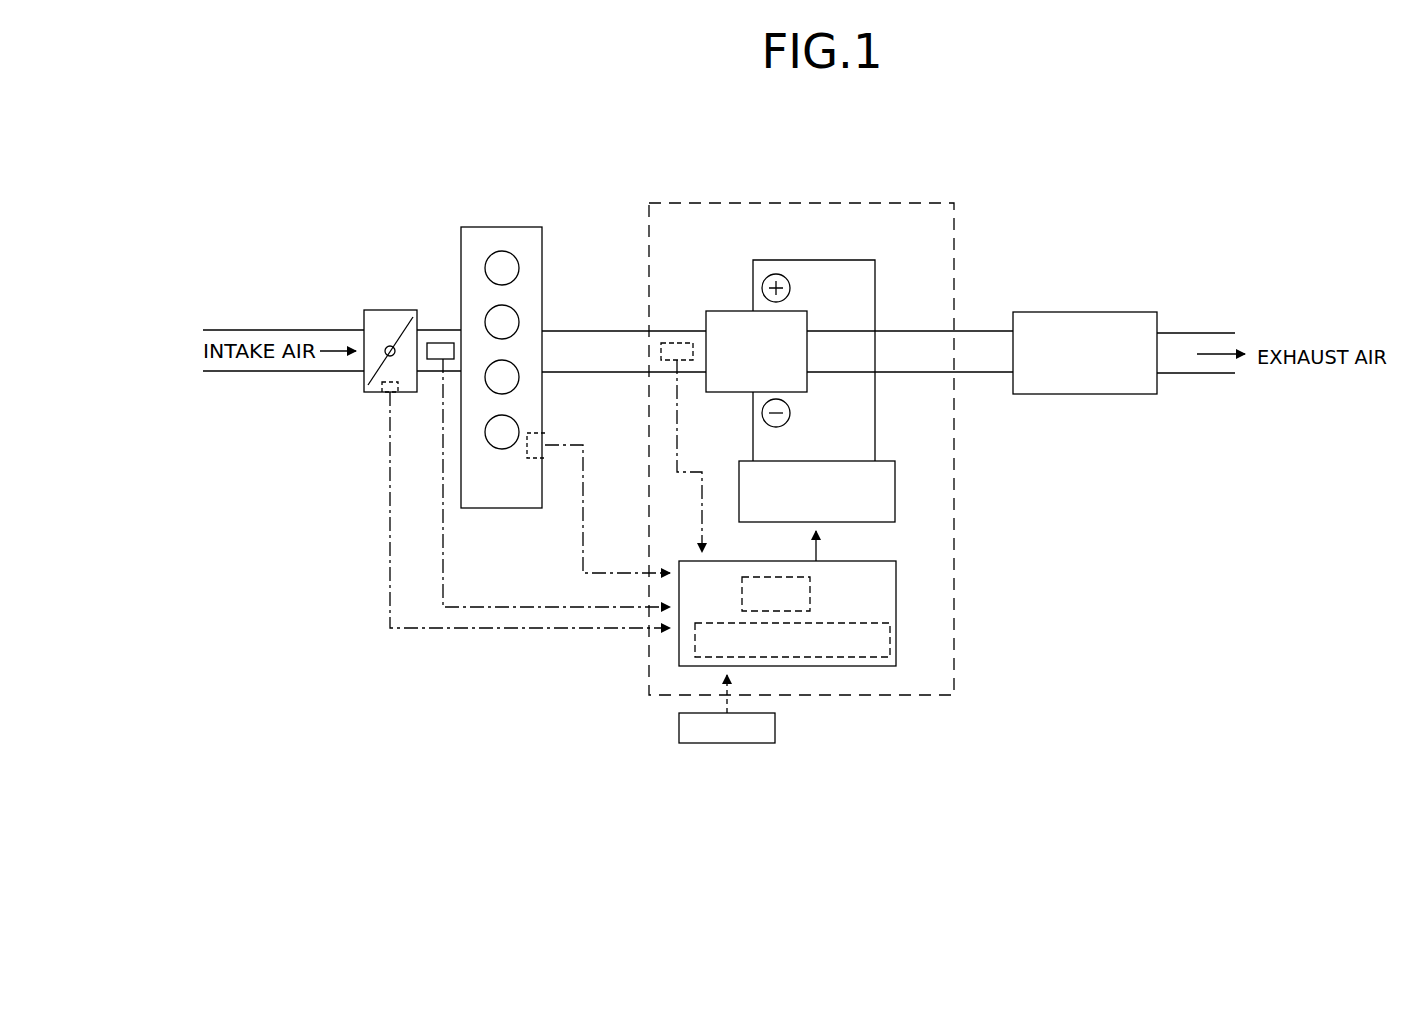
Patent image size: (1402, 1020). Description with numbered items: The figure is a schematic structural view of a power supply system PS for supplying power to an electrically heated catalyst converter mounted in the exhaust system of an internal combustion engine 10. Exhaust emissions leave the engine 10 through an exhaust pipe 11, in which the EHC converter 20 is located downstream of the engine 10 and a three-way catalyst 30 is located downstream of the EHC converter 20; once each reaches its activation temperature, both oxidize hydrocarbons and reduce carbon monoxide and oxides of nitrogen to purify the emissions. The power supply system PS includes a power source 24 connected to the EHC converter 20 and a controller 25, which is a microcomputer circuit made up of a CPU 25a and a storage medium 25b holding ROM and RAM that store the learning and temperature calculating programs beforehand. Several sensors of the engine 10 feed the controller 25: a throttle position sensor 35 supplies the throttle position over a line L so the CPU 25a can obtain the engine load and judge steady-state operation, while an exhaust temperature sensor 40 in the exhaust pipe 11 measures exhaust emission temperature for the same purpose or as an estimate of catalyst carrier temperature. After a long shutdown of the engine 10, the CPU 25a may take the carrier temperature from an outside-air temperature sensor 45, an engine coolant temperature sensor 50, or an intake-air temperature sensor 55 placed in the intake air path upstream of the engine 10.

The internal combustion engine 10 is at (502, 227).
The exhaust pipe 11 is at (600, 331).
The electrically heated catalyst converter 20 is at (720, 311).
The power source 24 is at (897, 491).
The controller 25 is at (885, 637).
The CPU 25a is at (768, 577).
The storage medium 25b is at (843, 667).
The three-way catalyst 30 is at (1088, 312).
The throttle position sensor 35 is at (386, 393).
The exhaust temperature sensor 40 is at (677, 343).
The outside-air temperature sensor 45 is at (730, 745).
The engine coolant temperature sensor 50 is at (540, 433).
The intake-air temperature sensor 55 is at (440, 343).
The line L is at (388, 570).
The power supply system PS is at (675, 672).